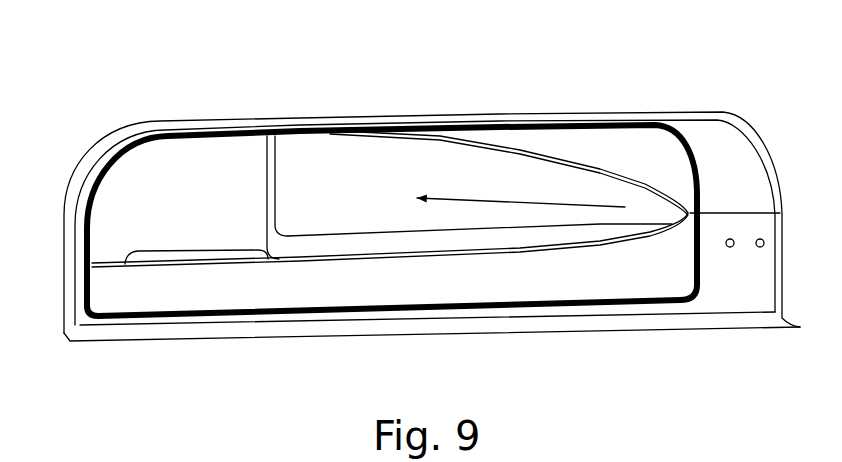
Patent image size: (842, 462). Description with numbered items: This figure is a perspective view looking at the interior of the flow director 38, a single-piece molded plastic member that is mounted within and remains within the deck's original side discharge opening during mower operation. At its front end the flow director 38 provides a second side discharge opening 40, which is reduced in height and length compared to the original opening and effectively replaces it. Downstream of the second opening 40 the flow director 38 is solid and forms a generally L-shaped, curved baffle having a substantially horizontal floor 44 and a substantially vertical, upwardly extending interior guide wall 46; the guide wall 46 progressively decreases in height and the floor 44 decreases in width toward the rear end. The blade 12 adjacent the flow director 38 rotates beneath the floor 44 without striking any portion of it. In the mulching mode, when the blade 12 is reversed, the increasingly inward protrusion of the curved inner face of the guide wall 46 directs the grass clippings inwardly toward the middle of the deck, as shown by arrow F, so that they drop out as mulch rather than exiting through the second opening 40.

The blade 12 is at (582, 152).
The flow director 38 is at (452, 103).
The second side discharge opening 40 is at (147, 175).
The floor 44 is at (198, 250).
The interior guide wall 46 is at (488, 172).
The arrow F is at (518, 200).